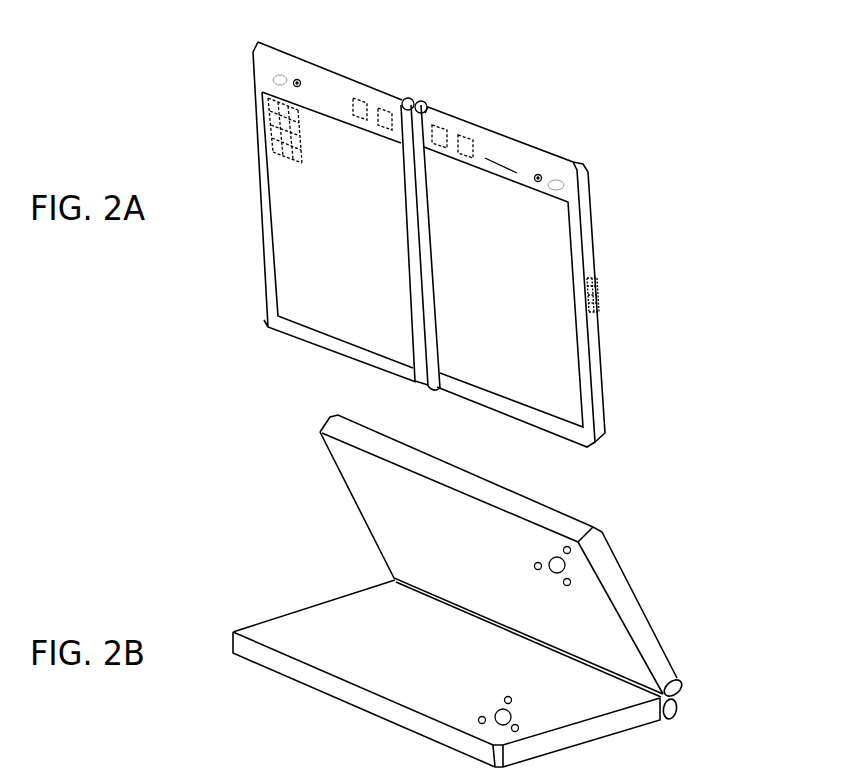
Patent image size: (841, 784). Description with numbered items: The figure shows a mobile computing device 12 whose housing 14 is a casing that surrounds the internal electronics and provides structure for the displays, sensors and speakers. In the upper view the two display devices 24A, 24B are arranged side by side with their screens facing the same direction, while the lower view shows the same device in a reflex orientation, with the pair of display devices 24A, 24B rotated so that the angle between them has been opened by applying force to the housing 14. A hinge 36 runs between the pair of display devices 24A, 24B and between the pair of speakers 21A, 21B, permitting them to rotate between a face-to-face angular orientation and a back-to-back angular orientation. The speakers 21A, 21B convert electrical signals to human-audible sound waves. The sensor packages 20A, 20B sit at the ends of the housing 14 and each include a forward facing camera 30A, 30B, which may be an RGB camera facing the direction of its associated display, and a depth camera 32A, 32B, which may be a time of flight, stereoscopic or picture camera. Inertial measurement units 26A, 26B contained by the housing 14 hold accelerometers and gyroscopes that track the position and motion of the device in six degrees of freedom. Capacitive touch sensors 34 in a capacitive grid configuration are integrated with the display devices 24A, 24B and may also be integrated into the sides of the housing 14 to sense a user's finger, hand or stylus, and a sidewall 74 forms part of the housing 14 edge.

The mobile computing device 12 is at (698, 74).
The housing 14 is at (491, 130).
The sensor package 20A is at (607, 131).
The sensor package 20B is at (192, 124).
The speaker 21A is at (466, 135).
The speaker 21B is at (356, 97).
The display device 24A is at (522, 386).
The display device 24B is at (360, 330).
The inertial measurement unit 26A is at (437, 125).
The inertial measurement unit 26B is at (387, 107).
The forward facing camera 30A is at (557, 179).
The forward facing camera 30B is at (276, 80).
The depth camera 32A is at (538, 176).
The depth camera 32B is at (296, 82).
The capacitive touch sensor 34 is at (282, 133).
The hinge 36 is at (418, 243).
The sidewall 74 is at (588, 247).